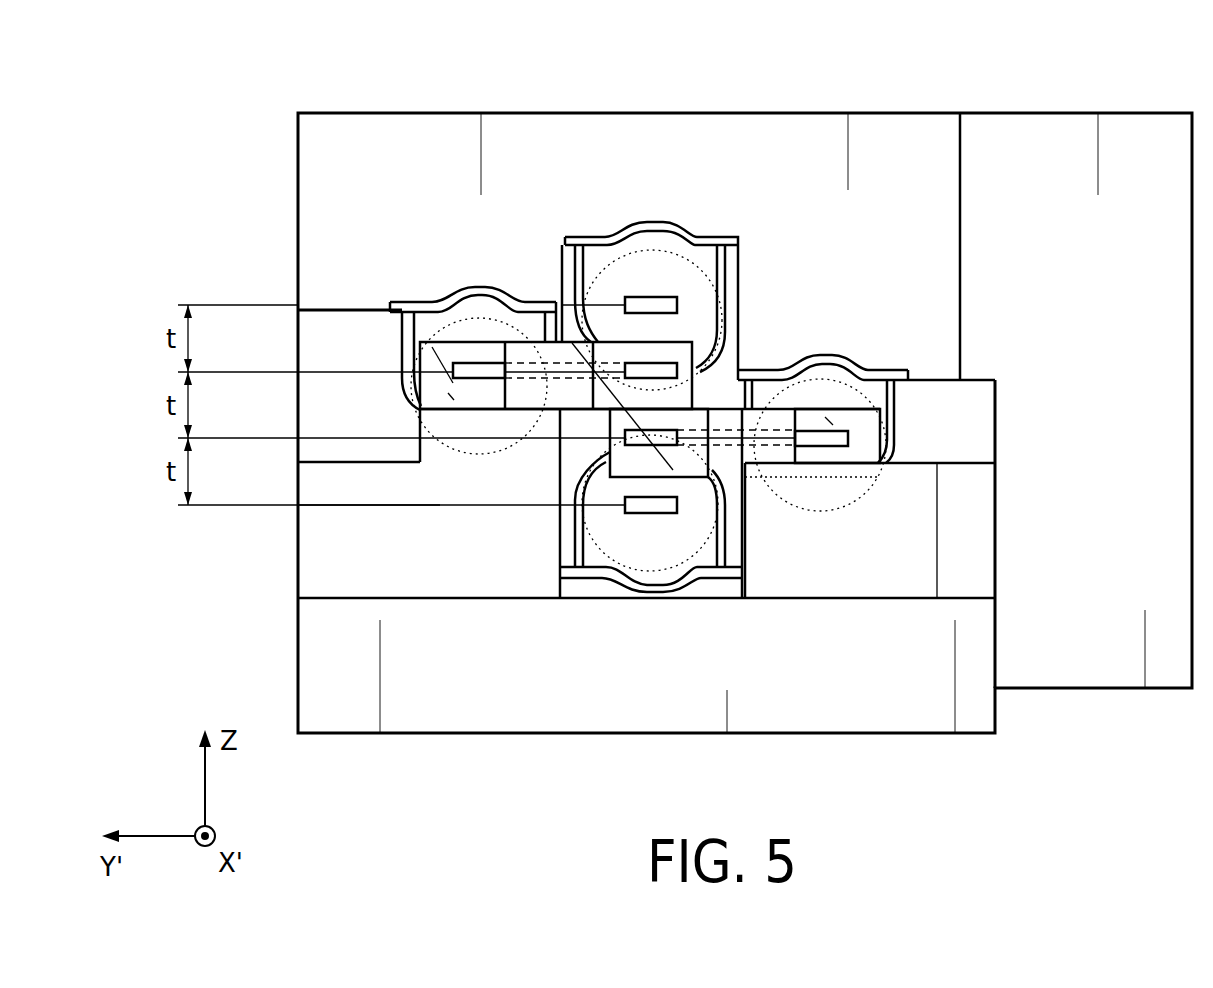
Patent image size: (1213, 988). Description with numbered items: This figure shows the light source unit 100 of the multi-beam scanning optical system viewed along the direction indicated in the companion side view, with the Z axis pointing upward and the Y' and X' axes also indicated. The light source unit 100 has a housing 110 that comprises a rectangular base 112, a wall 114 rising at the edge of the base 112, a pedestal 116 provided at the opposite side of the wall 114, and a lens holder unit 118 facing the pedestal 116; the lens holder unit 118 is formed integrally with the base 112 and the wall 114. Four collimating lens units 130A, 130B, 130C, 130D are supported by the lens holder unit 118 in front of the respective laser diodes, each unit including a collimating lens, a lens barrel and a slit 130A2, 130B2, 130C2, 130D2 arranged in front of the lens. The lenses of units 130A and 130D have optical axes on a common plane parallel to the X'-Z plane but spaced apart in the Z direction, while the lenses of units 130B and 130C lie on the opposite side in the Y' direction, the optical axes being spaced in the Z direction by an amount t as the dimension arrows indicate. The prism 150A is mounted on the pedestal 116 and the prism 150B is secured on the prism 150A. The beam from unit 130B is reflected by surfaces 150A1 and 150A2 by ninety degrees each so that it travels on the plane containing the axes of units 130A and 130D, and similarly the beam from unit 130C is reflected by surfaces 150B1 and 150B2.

The light source unit 100 is at (1009, 72).
The housing 110 is at (886, 742).
The rectangular base 112 is at (455, 687).
The wall 114 is at (775, 123).
The pedestal 116 is at (318, 548).
The lens holder unit 118 is at (323, 353).
The collimating lens unit 130A is at (608, 594).
The slit 130A2 is at (667, 514).
The collimating lens unit 130B is at (860, 358).
The slit 130B2 is at (848, 437).
The collimating lens unit 130C is at (508, 256).
The slit 130C2 is at (473, 363).
The collimating lens unit 130D is at (676, 226).
The slit 130D2 is at (643, 292).
The prism 150A is at (862, 448).
The reflecting surface 150A1 is at (840, 452).
The reflecting surface 150A2 is at (673, 470).
The prism 150B is at (447, 395).
The reflecting surface 150B1 is at (473, 398).
The reflecting surface 150B2 is at (585, 412).